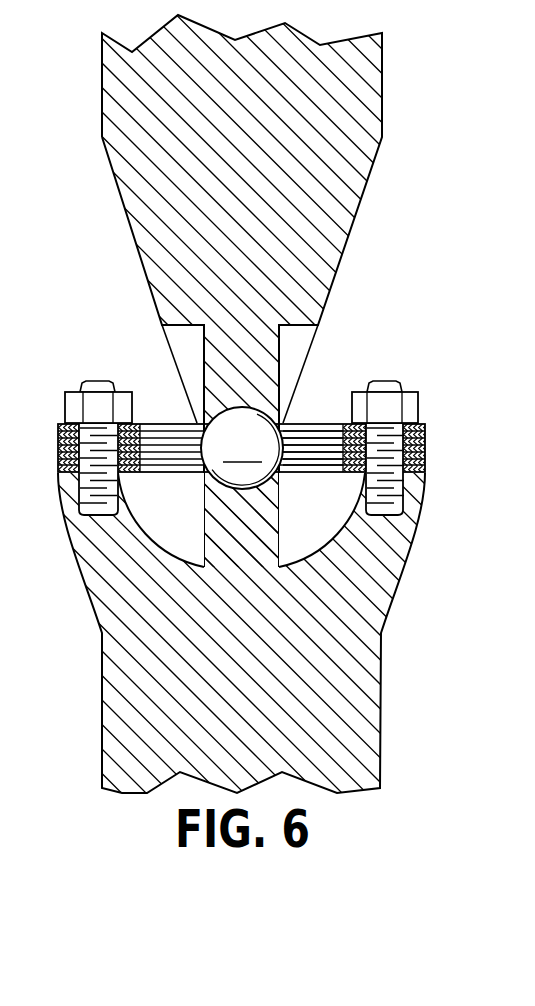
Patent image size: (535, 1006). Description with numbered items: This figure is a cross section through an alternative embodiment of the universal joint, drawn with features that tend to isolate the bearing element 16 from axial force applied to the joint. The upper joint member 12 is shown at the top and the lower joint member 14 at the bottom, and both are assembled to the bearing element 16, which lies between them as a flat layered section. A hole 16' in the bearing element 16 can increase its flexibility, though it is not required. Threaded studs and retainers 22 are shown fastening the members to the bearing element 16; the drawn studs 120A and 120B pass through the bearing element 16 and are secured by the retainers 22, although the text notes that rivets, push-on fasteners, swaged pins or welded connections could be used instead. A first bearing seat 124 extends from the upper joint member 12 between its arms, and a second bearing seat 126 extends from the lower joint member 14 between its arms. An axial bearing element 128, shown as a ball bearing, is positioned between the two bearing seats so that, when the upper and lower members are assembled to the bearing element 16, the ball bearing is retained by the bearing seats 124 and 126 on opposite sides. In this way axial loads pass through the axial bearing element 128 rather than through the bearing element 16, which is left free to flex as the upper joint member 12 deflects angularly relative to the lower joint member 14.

The upper joint member 12 is at (102, 78).
The lower joint member 14 is at (102, 715).
The bearing element 16 is at (272, 448).
The hole 16' is at (313, 473).
The retainer 22 is at (65, 405).
The first bolt 120A is at (386, 381).
The second bolt 120B is at (98, 381).
The first bearing seat 124 is at (203, 360).
The second bearing seat 126 is at (285, 540).
The axial bearing element 128 is at (242, 448).